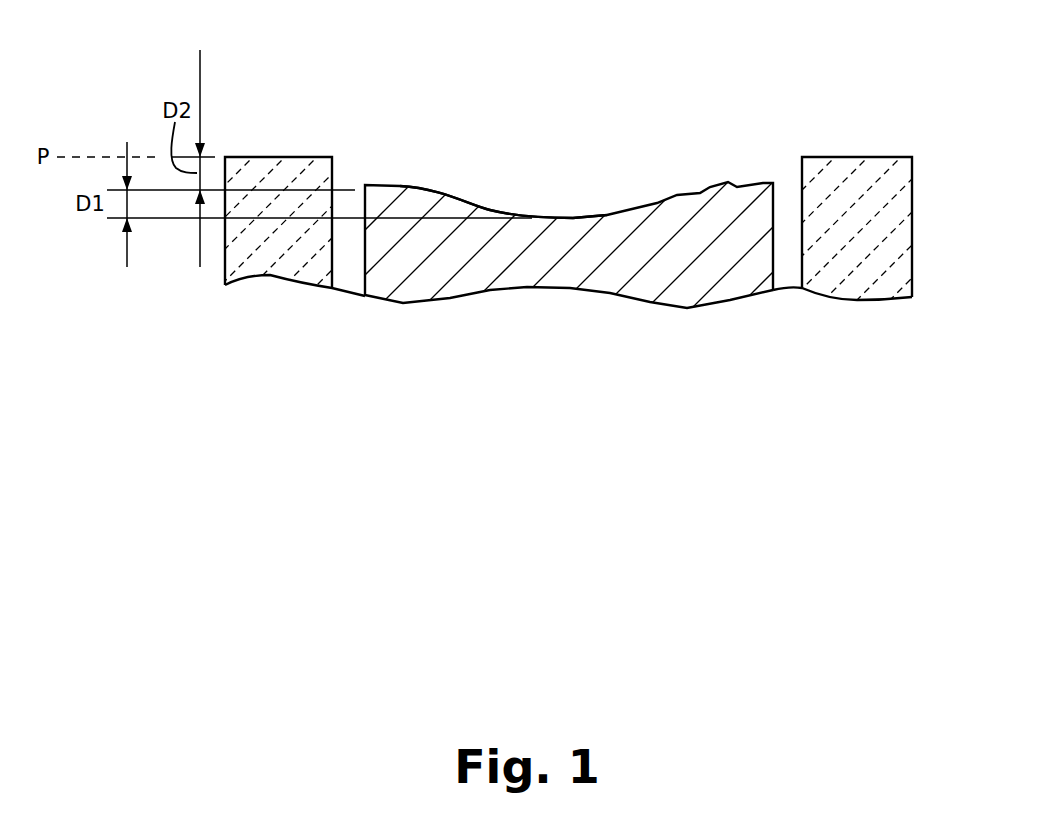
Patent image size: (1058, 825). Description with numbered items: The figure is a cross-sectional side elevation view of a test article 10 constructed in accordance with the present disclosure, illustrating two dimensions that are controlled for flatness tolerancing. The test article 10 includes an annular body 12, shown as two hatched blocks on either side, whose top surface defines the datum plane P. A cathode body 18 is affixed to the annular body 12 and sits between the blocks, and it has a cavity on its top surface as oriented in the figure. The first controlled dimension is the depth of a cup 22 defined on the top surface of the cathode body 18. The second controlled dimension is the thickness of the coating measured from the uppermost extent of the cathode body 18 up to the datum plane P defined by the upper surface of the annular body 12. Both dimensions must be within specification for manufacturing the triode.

The test article 10 is at (439, 62).
The annular body 12 is at (919, 224).
The cathode body 18 is at (698, 280).
The cup 22 is at (489, 209).